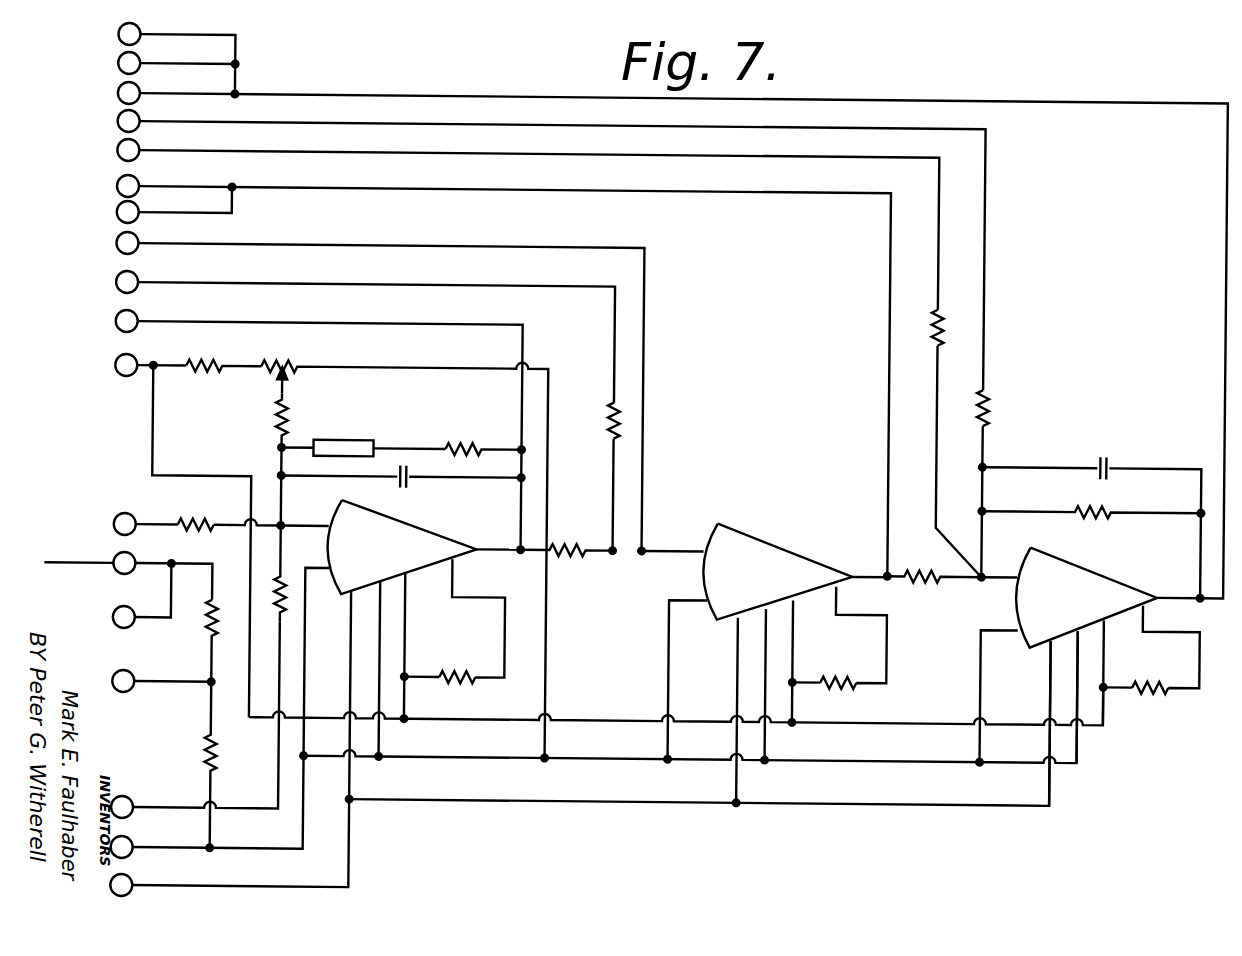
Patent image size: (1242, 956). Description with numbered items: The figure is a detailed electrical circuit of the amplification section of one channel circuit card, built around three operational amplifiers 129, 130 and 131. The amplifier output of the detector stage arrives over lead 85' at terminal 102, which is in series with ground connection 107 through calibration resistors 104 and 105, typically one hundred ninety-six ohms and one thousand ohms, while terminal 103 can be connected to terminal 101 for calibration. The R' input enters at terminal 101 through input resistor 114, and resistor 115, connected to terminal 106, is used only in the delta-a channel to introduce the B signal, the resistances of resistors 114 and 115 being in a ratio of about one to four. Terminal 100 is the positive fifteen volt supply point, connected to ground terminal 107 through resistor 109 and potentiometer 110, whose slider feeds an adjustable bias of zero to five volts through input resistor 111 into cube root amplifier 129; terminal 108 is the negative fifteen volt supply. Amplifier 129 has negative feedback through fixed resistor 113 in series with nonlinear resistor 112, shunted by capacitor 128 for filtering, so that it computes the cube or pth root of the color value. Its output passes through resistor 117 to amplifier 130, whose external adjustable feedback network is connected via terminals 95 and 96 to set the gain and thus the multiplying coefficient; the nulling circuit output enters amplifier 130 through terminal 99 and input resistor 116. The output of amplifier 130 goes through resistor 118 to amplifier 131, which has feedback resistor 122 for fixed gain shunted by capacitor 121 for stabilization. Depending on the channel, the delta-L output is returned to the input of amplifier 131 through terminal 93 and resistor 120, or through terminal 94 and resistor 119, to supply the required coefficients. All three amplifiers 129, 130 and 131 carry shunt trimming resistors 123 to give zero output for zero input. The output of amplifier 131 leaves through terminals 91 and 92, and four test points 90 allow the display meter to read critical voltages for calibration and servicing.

The amplifier output lead 85' is at (61, 549).
The test points 90 is at (112, 35).
The terminal 91 is at (112, 64).
The terminal 92 is at (112, 96).
The terminal 93 is at (112, 123).
The terminal 94 is at (112, 153).
The terminal 95 is at (112, 189).
The terminal 96 is at (112, 246).
The terminal 99 is at (112, 285).
The +15 volt supply terminal 100 is at (112, 367).
The input terminal 101 is at (112, 525).
The terminal 102 is at (112, 572).
The terminal 103 is at (112, 683).
The calibration resistor 104 is at (208, 625).
The calibration resistor 105 is at (208, 756).
The terminal 106 is at (136, 800).
The ground terminal 107 is at (136, 840).
The -15 volt supply terminal 108 is at (136, 878).
The resistor 109 is at (208, 365).
The potentiometer 110 is at (286, 364).
The input resistor 111 is at (271, 423).
The nonlinear resistor 112 is at (345, 440).
The fixed resistor 113 is at (461, 441).
The input resistor 114 is at (195, 518).
The resistor 115 is at (286, 590).
The input resistor 116 is at (622, 414).
The resistor 117 is at (580, 558).
The resistor 118 is at (934, 580).
The resistor 119 is at (946, 320).
The resistor 120 is at (990, 402).
The capacitor 121 is at (1102, 444).
The feedback resistor 122 is at (1093, 512).
The trimming resistors 123 is at (462, 662).
The shunt capacitor 128 is at (408, 486).
The cube root amplifier 129 is at (423, 650).
The amplifier 130 is at (763, 663).
The amplifier 131 is at (1089, 677).